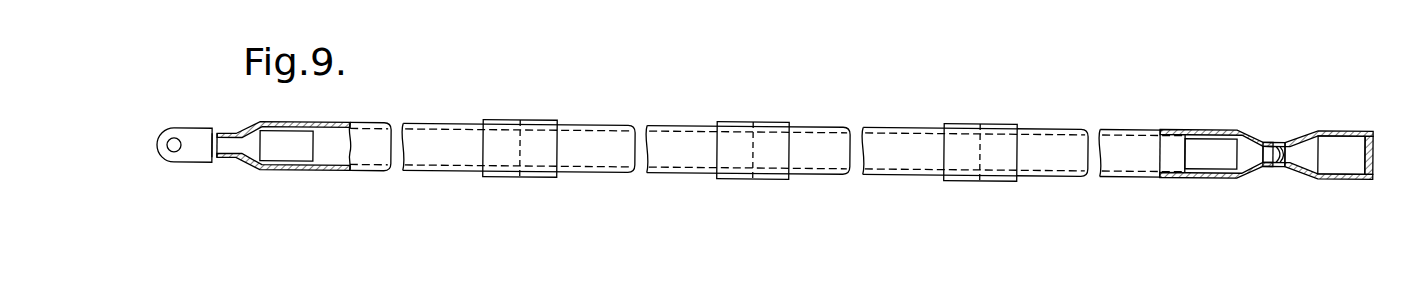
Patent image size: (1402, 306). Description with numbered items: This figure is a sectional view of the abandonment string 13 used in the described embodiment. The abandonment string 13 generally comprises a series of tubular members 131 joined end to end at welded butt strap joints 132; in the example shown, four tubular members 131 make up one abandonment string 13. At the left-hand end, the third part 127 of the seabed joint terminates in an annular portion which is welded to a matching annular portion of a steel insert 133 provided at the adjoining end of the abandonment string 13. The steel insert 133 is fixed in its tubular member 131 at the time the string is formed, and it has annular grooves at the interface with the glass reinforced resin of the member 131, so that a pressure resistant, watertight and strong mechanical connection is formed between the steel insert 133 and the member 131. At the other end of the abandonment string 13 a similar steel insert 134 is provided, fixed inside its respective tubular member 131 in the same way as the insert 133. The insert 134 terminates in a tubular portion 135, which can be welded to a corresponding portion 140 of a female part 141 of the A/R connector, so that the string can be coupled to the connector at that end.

The abandonment string 13 is at (765, 160).
The third part of the seabed joint 127 is at (191, 153).
The tubular member 131 is at (368, 137).
The welded butt strap joint 132 is at (531, 132).
The steel insert 133 is at (236, 129).
The steel insert 134 is at (1217, 141).
The tubular portion 135 is at (1268, 172).
The corresponding portion 140 is at (1280, 172).
The female part 141 is at (1300, 143).